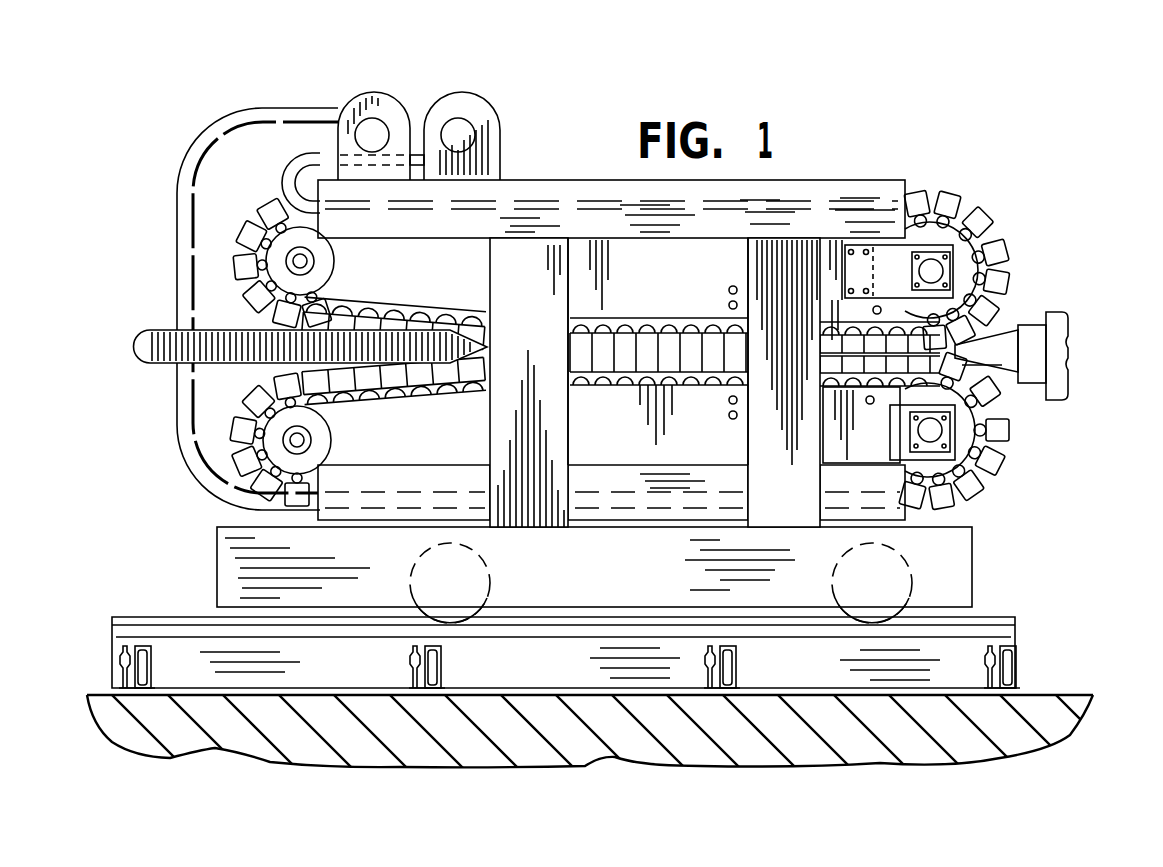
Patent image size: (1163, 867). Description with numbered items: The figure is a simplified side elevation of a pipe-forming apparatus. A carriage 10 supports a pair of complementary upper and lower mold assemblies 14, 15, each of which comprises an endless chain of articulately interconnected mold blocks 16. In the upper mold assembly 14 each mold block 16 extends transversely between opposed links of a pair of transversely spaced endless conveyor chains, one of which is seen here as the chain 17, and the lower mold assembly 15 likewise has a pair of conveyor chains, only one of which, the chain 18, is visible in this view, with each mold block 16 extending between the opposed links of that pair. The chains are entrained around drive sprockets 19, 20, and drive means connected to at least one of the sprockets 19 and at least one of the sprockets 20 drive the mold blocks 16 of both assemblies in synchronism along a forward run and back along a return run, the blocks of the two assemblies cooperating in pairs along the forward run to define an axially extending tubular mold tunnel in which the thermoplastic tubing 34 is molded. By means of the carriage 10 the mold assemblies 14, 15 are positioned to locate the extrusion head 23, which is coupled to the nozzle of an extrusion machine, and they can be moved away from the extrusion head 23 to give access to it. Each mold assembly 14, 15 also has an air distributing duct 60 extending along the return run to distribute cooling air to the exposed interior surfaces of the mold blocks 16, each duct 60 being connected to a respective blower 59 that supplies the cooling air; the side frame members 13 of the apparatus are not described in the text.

The carriage 10 is at (956, 586).
The side frame member 13 is at (557, 403).
The upper mold assembly 14 is at (492, 284).
The lower mold assembly 15 is at (468, 433).
The mold blocks 16 is at (248, 228).
The upper chain run 17 is at (399, 308).
The endless conveyor chain 18 is at (363, 403).
The drive sprockets 19 is at (336, 286).
The drive sprockets 20 is at (337, 442).
The extrusion head 23 is at (1015, 326).
The thermoplastic tubing 34 is at (146, 340).
The blower 59 is at (382, 97).
The air distributing duct 60 is at (556, 192).